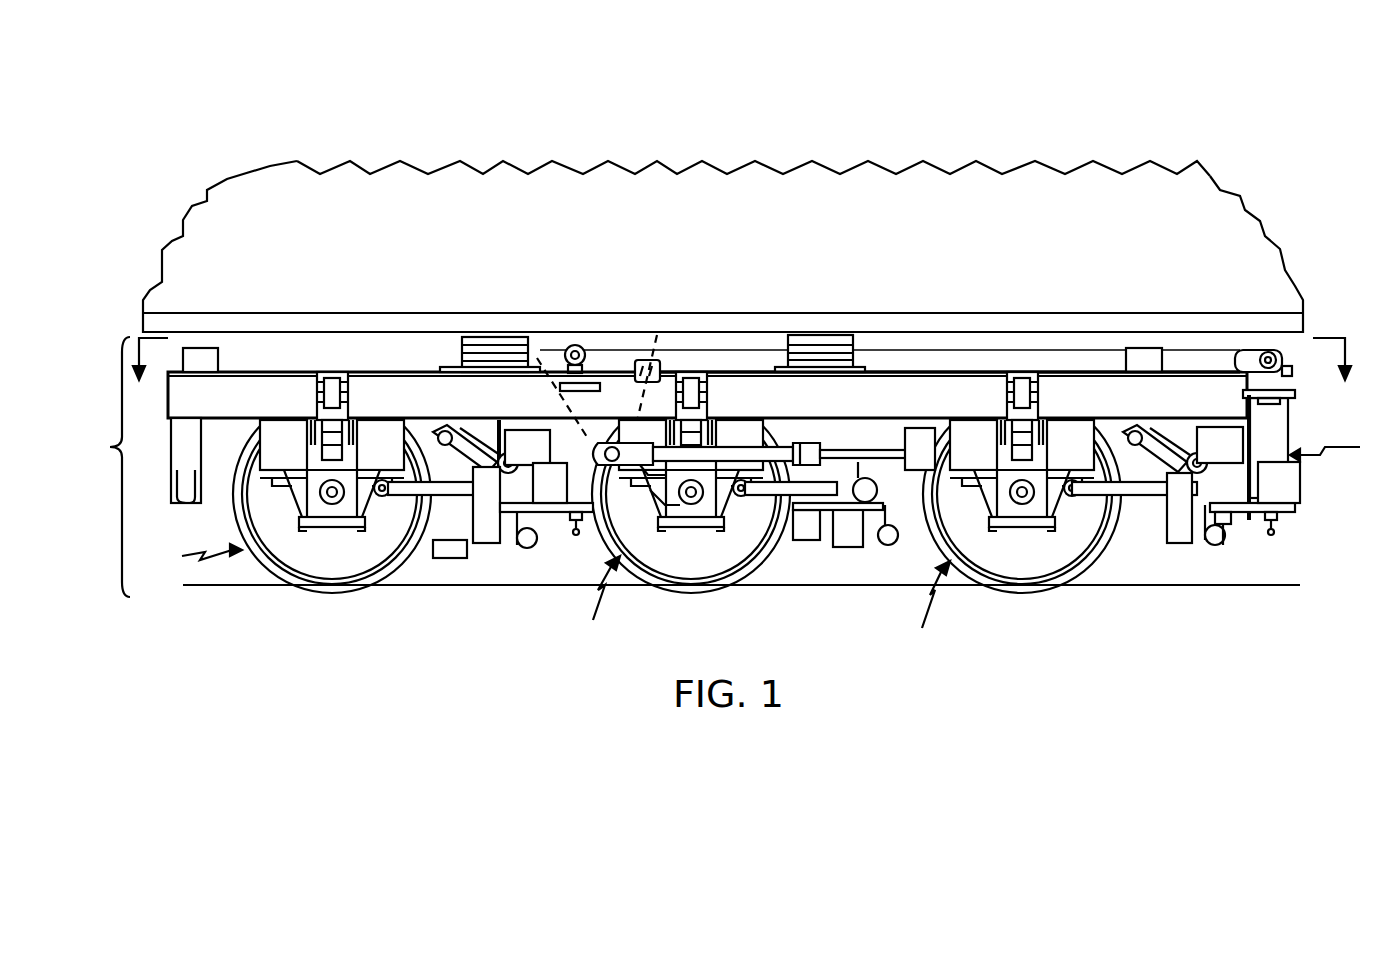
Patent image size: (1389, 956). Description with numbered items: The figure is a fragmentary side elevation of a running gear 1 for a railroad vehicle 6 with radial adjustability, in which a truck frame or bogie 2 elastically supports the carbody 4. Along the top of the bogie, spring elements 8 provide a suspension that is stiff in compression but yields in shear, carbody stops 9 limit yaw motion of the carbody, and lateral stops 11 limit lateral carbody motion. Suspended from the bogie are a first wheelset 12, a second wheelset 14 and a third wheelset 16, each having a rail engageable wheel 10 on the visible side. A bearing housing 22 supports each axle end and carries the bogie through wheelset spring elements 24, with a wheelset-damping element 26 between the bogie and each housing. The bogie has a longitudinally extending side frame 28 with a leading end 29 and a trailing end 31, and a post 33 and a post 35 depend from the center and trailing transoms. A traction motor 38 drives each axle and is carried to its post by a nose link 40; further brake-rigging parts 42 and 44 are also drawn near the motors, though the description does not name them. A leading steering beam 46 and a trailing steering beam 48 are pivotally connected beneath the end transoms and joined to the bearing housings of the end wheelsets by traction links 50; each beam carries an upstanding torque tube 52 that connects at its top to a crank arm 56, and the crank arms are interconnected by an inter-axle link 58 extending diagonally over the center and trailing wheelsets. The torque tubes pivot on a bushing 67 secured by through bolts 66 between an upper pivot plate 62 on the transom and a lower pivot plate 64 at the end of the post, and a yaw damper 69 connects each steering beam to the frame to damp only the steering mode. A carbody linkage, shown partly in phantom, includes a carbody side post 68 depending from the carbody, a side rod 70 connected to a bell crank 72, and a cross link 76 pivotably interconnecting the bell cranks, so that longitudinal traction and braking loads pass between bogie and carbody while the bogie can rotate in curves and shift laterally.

The running gear 1 is at (109, 467).
The bogie 2 is at (713, 409).
The carbody 4 is at (937, 178).
The railroad vehicle 6 is at (356, 160).
The spring elements 8 is at (790, 345).
The carbody stops 9 is at (1146, 357).
The first rail engageable wheel 10 is at (995, 560).
The lateral stops 11 is at (648, 357).
The first wheelset 12 is at (194, 554).
The second wheelset 14 is at (596, 599).
The third wheelset 16 is at (927, 605).
The bearing housing 22 is at (1021, 528).
The wheelset spring elements 24 is at (1076, 435).
The wheelset-damping element 26 is at (1030, 396).
The side frame 28 is at (185, 415).
The leading end 29 is at (160, 418).
The trailing end 31 is at (1339, 445).
The post 33 is at (527, 446).
The post 35 is at (1220, 444).
The traction motor 38 is at (1152, 548).
The nose link 40 is at (1218, 548).
The brake block 42 is at (790, 560).
The bracket 44 is at (665, 505).
The leading steering beam 46 is at (540, 510).
The trailing steering beam 48 is at (1232, 522).
The traction link 50 is at (1110, 492).
The torque tube 52 is at (1255, 410).
The crank arm 56 is at (1293, 392).
The inter-axle link 58 is at (730, 360).
The upper pivot plate 62 is at (1262, 352).
The lower pivot plate 64 is at (1296, 512).
The through bolts 66 is at (1272, 536).
The bushing 67 is at (640, 466).
The carbody side post 68 is at (662, 335).
The yaw damper 69 is at (1150, 432).
The side rod 70 is at (793, 440).
The bell crank 72 is at (855, 445).
The cross link 76 is at (920, 438).